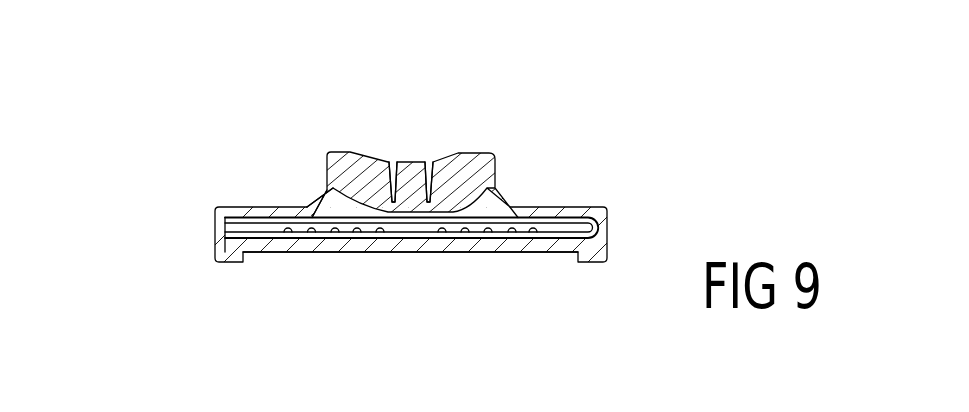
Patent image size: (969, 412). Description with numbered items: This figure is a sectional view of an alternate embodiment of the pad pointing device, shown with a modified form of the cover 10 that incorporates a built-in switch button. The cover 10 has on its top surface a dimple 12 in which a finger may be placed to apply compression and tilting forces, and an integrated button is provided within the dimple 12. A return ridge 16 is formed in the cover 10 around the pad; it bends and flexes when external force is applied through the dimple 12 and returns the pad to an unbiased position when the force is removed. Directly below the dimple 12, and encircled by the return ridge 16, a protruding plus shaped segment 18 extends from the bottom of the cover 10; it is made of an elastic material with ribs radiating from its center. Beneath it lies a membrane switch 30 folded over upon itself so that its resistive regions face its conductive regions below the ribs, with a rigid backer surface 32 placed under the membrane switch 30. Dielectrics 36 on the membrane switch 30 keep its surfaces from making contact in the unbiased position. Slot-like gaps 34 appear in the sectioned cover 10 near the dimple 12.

The cover 10 is at (605, 208).
The dimple 12 is at (372, 157).
The return ridge 16 is at (317, 197).
The protruding plus shaped segment 18 is at (452, 209).
The membrane switch 30 is at (235, 223).
The rigid backer surface 32 is at (227, 248).
The slot 34 is at (417, 158).
The dielectrics 36 is at (312, 233).